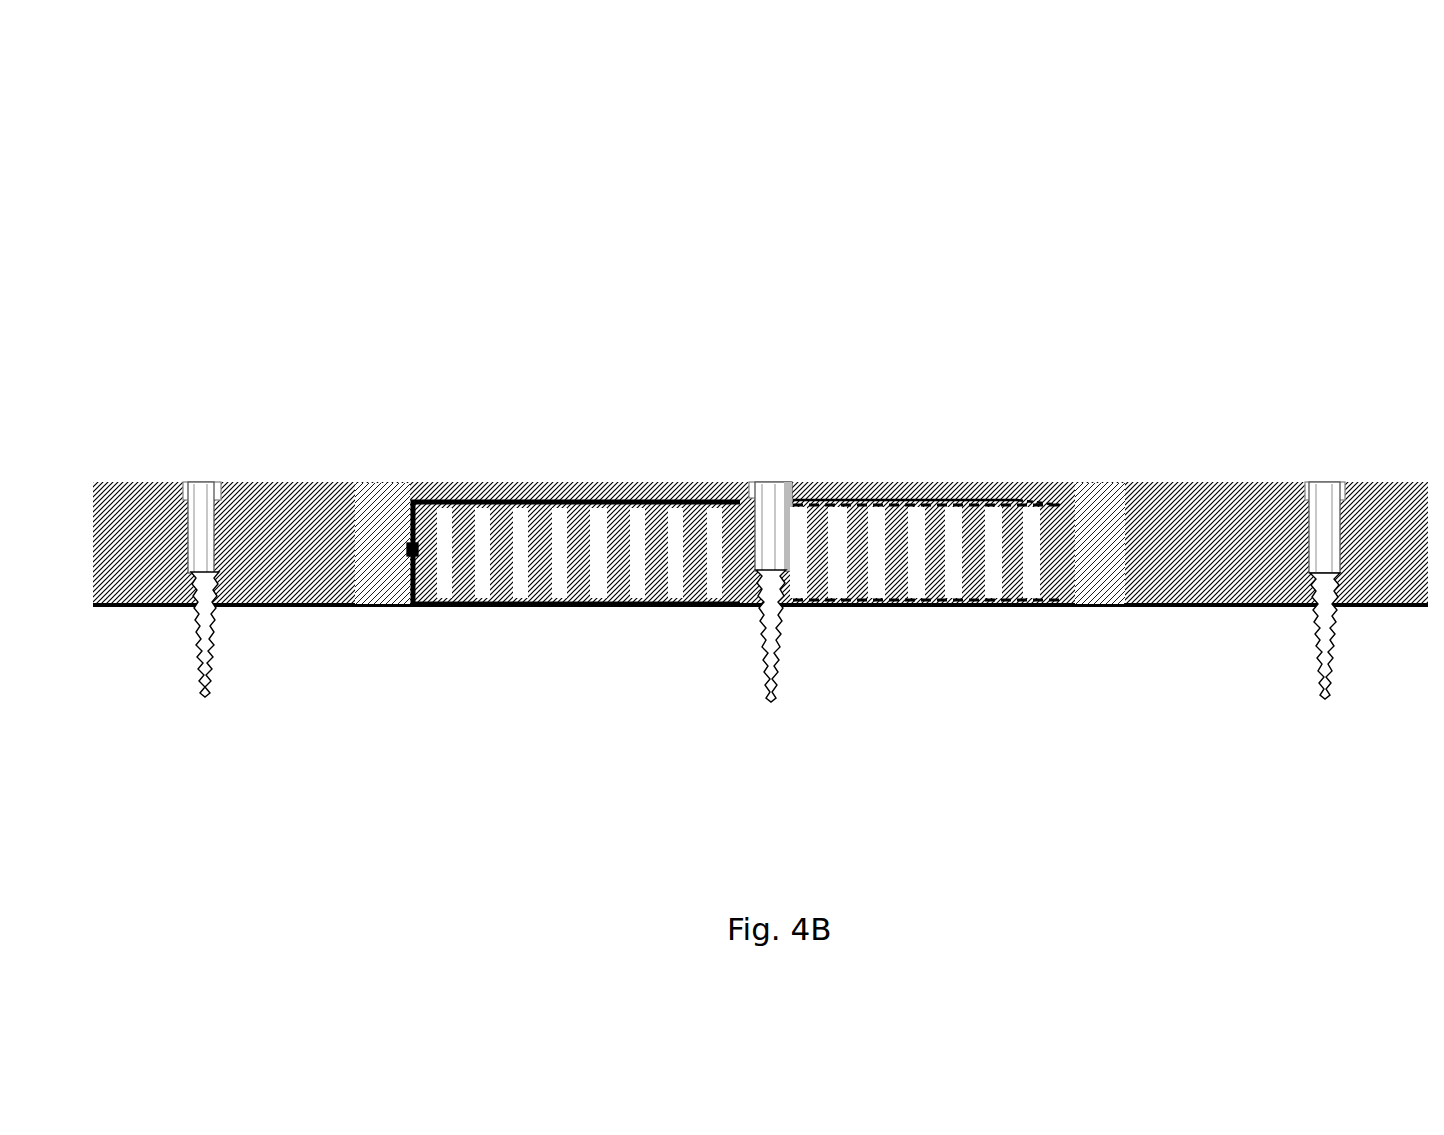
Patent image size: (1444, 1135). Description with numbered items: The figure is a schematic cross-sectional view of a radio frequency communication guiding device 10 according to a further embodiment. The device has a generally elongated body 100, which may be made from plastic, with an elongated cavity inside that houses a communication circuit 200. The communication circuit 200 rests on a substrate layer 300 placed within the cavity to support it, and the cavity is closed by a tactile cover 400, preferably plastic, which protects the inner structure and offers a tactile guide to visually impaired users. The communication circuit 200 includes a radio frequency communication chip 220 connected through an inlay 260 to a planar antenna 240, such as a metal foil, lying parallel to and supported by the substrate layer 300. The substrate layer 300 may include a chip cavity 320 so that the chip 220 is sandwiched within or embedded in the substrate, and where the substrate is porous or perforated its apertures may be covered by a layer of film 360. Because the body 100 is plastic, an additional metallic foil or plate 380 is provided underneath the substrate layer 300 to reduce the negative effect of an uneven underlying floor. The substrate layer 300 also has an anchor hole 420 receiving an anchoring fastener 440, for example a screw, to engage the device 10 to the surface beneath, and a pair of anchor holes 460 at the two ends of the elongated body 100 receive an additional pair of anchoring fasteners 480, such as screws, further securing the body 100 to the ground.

The radio frequency communication guiding device 10 is at (1287, 90).
The elongated body 100 is at (153, 527).
The communication circuit 200 is at (476, 532).
The radio frequency communication chip 220 is at (408, 553).
The antenna 240 is at (605, 497).
The inlay 260 is at (411, 500).
The substrate layer 300 is at (900, 558).
The chip cavity 320 is at (425, 575).
The layer of film 360 is at (1022, 503).
The metallic foil or plate 380 is at (532, 605).
The tactile cover 400 is at (1100, 513).
The anchor hole 420 is at (793, 563).
The anchoring fastener 440 is at (783, 620).
The anchor holes 460 is at (190, 510).
The anchoring fasteners 480 is at (210, 565).